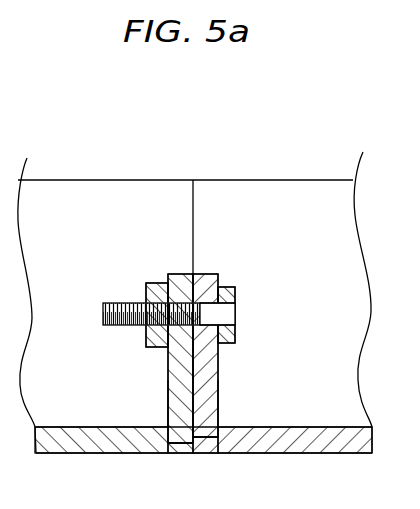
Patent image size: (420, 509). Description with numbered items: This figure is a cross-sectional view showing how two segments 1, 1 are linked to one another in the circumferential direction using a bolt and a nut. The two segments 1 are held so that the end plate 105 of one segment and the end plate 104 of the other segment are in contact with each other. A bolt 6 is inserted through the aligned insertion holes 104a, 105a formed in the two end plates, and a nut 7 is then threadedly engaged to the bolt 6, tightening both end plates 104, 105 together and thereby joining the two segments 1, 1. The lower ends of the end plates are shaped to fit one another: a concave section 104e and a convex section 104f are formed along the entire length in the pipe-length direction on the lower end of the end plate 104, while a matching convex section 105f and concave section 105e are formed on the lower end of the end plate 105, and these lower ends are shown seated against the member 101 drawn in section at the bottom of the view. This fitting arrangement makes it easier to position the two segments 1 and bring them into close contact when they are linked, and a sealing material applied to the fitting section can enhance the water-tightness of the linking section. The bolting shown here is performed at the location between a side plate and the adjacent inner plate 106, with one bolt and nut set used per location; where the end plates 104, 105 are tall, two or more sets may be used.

The segment 1 is at (128, 166).
The bolt 6 is at (237, 296).
The nut 7 is at (145, 290).
The base plate 101 is at (76, 453).
The end plate 104 is at (216, 274).
The insertion hole 104a is at (236, 334).
The concave section 104e is at (218, 420).
The convex section 104f is at (194, 455).
The end plate 105 is at (174, 274).
The insertion hole 105a is at (143, 332).
The concave section 105e is at (188, 453).
The convex section 105f is at (168, 417).
The inner plate 106 is at (61, 180).